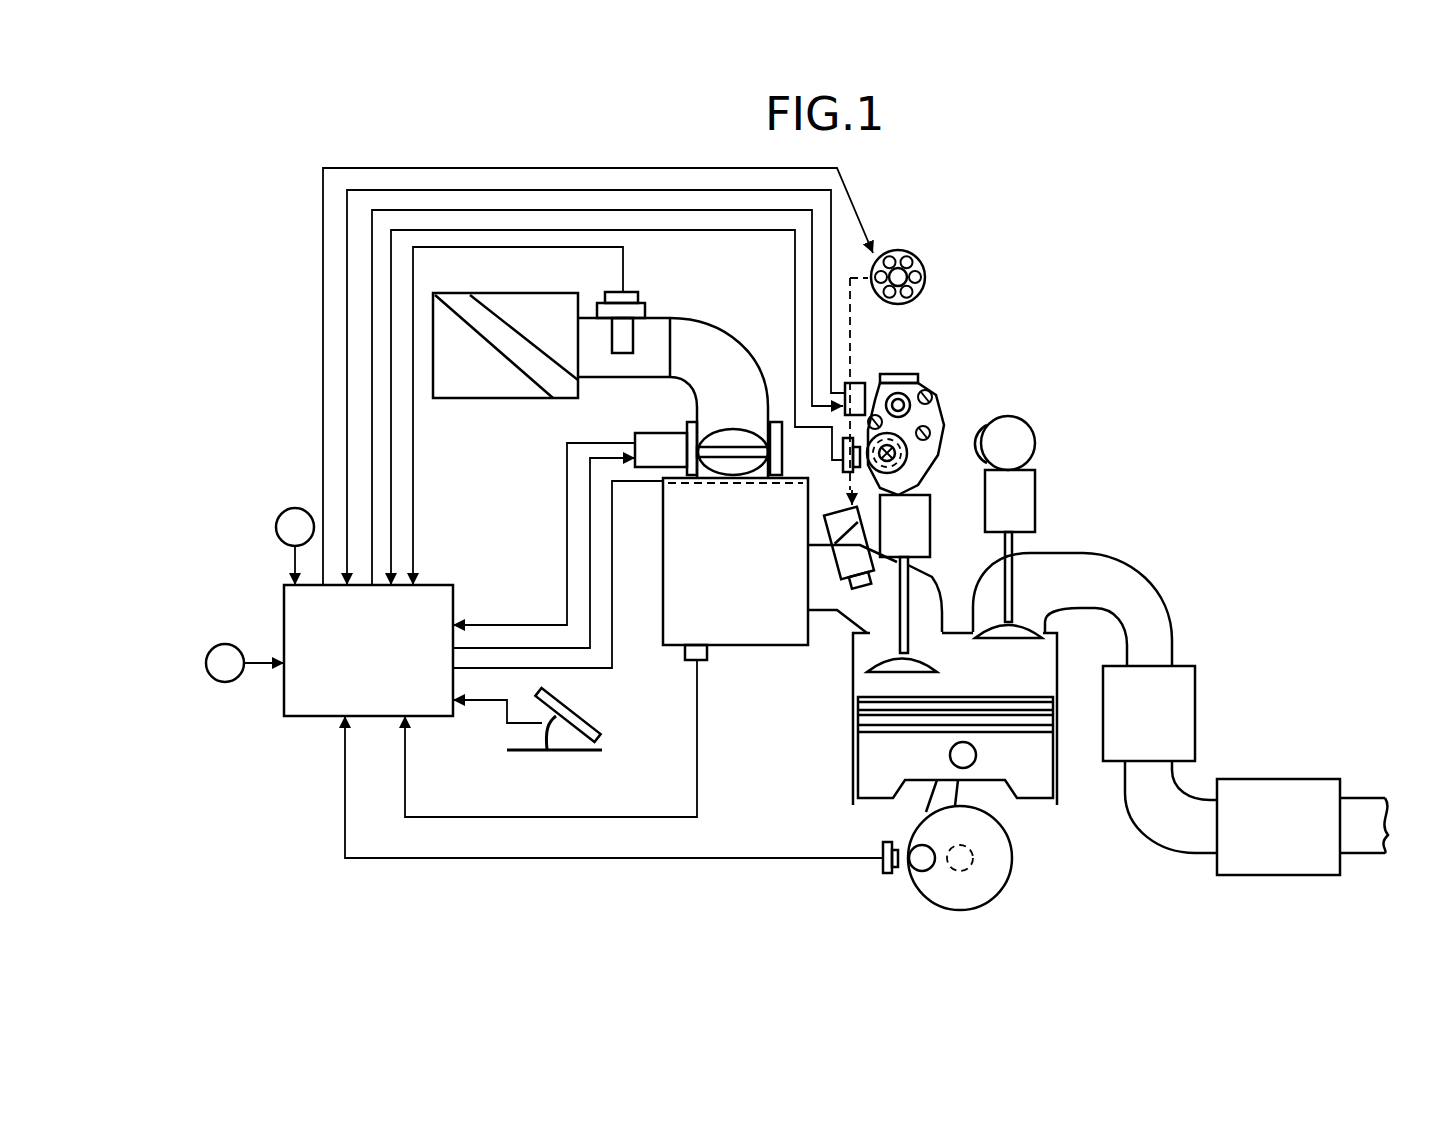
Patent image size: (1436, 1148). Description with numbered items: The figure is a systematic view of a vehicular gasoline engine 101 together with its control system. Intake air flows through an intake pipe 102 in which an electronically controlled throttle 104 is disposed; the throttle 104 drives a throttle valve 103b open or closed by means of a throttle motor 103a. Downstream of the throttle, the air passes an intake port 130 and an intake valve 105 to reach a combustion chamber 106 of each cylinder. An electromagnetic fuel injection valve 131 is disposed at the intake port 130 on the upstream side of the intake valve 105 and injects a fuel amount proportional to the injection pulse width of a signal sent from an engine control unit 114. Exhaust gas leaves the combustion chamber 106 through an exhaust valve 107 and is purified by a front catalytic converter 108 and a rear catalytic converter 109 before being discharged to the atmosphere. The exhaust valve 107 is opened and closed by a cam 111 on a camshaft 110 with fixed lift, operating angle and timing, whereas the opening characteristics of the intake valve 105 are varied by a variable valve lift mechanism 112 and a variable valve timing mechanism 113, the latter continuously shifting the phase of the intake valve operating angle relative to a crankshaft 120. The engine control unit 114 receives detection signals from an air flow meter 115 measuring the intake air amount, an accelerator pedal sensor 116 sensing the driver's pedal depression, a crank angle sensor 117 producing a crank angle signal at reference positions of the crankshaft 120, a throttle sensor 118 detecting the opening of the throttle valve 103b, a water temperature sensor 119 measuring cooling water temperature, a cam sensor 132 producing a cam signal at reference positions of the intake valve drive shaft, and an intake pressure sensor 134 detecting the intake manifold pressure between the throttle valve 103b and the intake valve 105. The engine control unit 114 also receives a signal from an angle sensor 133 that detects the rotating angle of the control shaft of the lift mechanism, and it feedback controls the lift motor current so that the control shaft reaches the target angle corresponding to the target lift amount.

The engine 101 is at (848, 750).
The intake pipe 102 is at (712, 330).
The throttle motor 103a is at (645, 447).
The throttle valve 103b is at (722, 445).
The electronically controlled throttle 104 is at (578, 428).
The intake valve 105 is at (910, 610).
The combustion chamber 106 is at (1055, 662).
The exhaust valve 107 is at (1012, 550).
The front catalytic converter 108 is at (1196, 672).
The rear catalytic converter 109 is at (1310, 779).
The camshaft 110 is at (1010, 440).
The cam 111 is at (985, 428).
The variable valve lift mechanism 112 is at (948, 323).
The variable valve timing mechanism 113 is at (925, 258).
The engine control unit 114 is at (312, 717).
The air flow meter 115 is at (630, 300).
The accelerator pedal sensor 116 is at (527, 752).
The crank angle sensor 117 is at (880, 868).
The throttle sensor 118 is at (778, 420).
The water temperature sensor 119 is at (290, 508).
The crankshaft 120 is at (975, 853).
The intake port 130 is at (835, 612).
The fuel injection valve 131 is at (840, 535).
The cam sensor 132 is at (843, 466).
The angle sensor 133 is at (215, 645).
The intake pressure sensor 134 is at (690, 660).